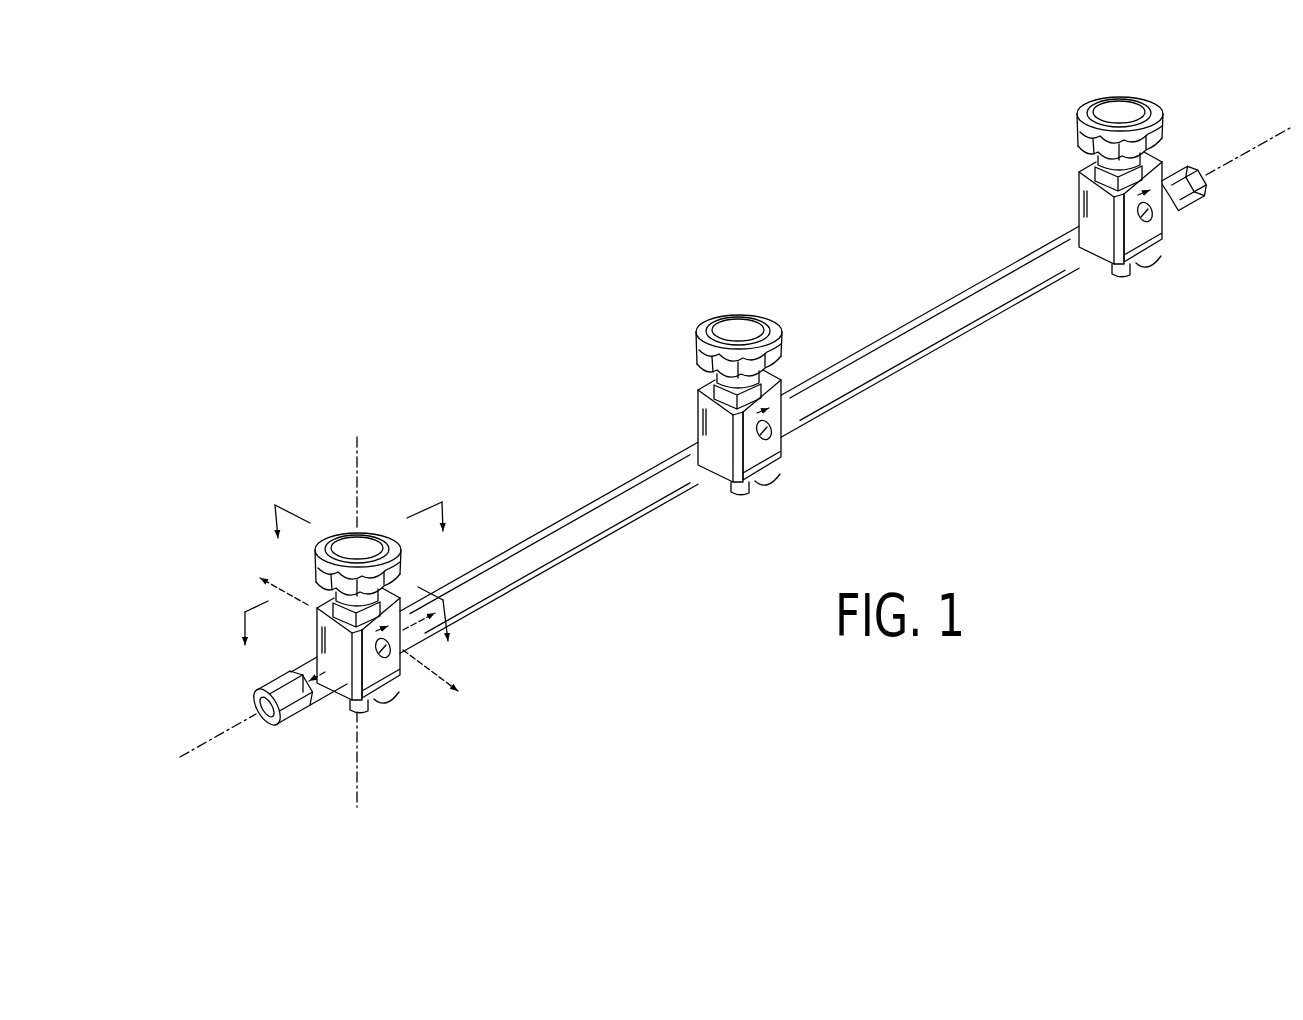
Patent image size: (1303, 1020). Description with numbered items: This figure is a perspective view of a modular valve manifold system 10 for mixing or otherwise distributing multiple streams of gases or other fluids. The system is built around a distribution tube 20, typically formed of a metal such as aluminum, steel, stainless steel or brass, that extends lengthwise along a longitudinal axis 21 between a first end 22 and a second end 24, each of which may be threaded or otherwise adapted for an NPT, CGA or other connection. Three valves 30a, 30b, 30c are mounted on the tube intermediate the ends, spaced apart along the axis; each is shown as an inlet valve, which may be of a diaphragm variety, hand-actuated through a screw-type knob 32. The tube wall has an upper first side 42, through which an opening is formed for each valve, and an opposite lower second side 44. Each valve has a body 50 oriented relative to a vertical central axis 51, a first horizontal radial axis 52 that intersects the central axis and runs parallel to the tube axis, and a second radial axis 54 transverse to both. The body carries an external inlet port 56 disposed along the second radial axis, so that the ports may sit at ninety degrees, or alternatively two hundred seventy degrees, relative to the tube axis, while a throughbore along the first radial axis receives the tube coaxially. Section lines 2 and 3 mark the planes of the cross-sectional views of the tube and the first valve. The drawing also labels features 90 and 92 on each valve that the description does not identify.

The modular valve manifold system 10 is at (850, 158).
The distribution tube 20 is at (865, 305).
The longitudinal axis 21 is at (1250, 148).
The first end 22 is at (298, 713).
The second end 24 is at (1198, 198).
The valve 30a is at (405, 432).
The valve 30b is at (740, 245).
The valve 30c is at (1056, 100).
The screw-type knob 32 is at (383, 530).
The first side 42 is at (928, 330).
The second side 44 is at (913, 363).
The body 50 is at (392, 710).
The central axis 51 is at (356, 487).
The first radial axis 52 is at (323, 684).
The second radial axis 54 is at (447, 688).
The external inlet port 56 is at (386, 660).
The clamp body side face 90 is at (326, 652).
The bottom stub 92 is at (376, 717).
The section line 2 is at (344, 593).
The section line 3 is at (361, 598).